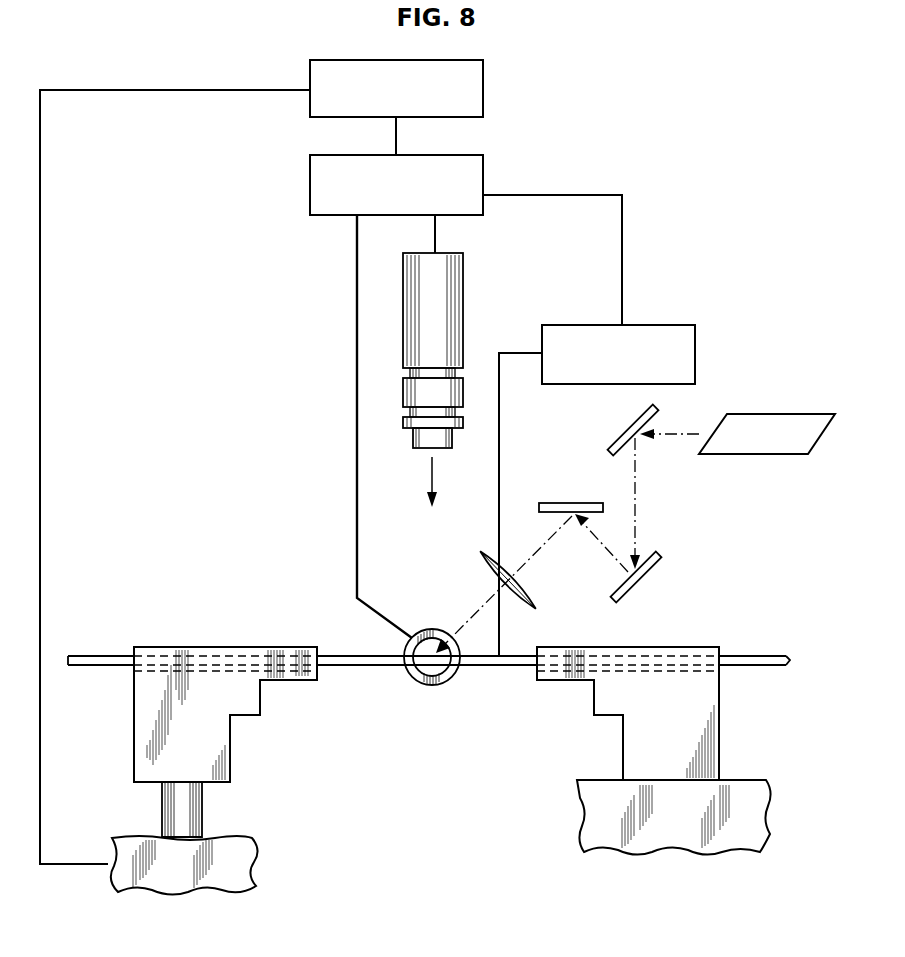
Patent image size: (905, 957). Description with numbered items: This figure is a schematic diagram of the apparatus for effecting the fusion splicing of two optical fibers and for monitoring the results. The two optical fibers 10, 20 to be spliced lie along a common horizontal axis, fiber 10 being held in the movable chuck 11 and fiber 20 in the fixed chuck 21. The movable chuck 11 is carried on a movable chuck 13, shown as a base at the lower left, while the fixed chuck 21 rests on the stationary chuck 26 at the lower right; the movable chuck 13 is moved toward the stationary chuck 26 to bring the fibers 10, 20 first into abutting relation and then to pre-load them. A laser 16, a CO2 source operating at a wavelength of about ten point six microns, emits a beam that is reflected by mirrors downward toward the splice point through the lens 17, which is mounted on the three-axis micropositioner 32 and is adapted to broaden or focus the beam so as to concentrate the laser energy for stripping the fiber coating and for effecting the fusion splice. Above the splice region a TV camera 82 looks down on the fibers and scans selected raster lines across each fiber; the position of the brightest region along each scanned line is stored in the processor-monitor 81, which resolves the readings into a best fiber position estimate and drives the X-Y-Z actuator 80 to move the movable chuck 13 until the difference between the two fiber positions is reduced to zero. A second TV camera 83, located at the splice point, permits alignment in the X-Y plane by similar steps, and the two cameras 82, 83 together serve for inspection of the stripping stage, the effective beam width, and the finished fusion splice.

The optical fiber 10 is at (105, 655).
The movable chuck 11 is at (183, 647).
The chuck 13 is at (256, 865).
The laser 16 is at (776, 414).
The lens 17 is at (535, 590).
The optical fiber 20 is at (748, 655).
The fixed chuck 21 is at (675, 647).
The stationary chuck 26 is at (577, 826).
The micropositioner 32 is at (645, 325).
The X-Y-Z actuator 80 is at (483, 90).
The processor-monitor 81 is at (483, 185).
The TV camera 82 is at (463, 282).
The TV camera 83 is at (420, 685).